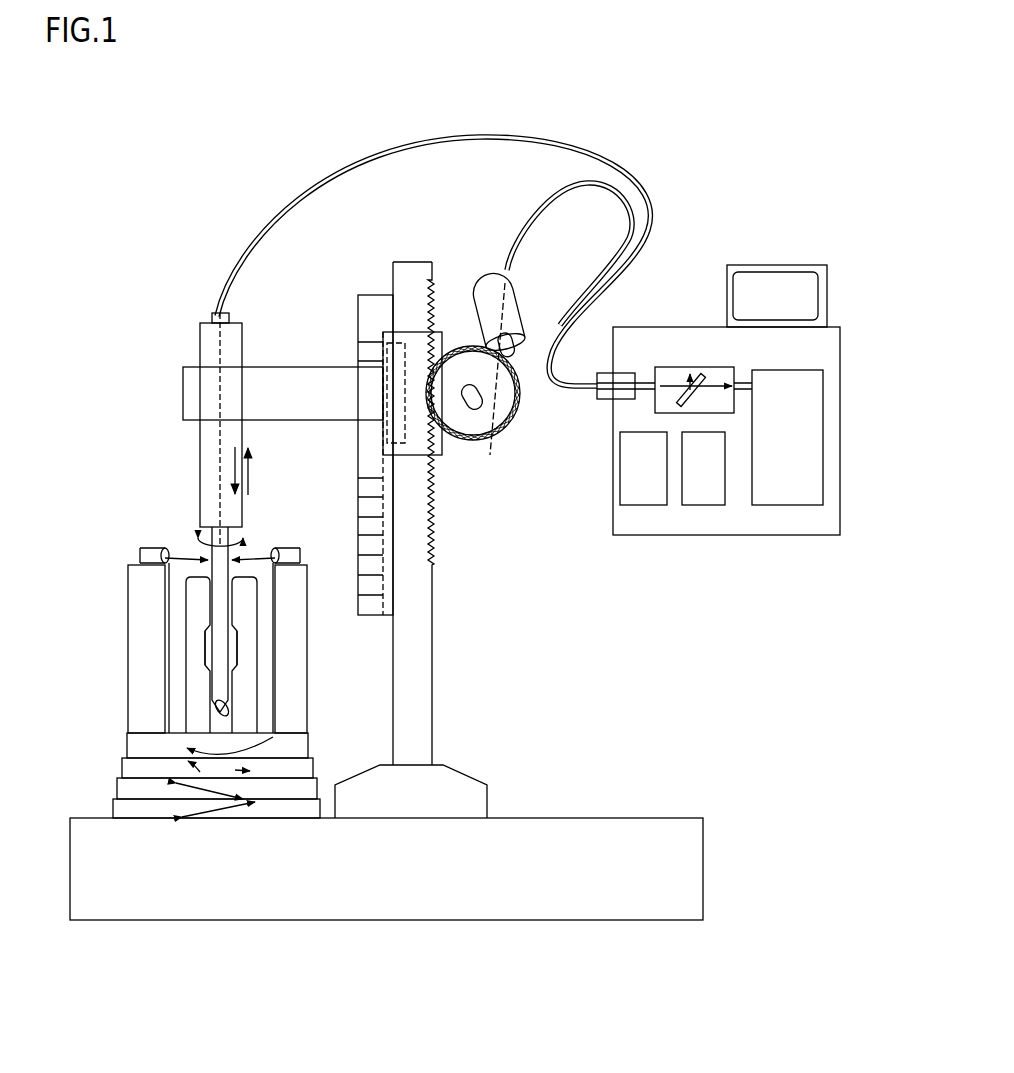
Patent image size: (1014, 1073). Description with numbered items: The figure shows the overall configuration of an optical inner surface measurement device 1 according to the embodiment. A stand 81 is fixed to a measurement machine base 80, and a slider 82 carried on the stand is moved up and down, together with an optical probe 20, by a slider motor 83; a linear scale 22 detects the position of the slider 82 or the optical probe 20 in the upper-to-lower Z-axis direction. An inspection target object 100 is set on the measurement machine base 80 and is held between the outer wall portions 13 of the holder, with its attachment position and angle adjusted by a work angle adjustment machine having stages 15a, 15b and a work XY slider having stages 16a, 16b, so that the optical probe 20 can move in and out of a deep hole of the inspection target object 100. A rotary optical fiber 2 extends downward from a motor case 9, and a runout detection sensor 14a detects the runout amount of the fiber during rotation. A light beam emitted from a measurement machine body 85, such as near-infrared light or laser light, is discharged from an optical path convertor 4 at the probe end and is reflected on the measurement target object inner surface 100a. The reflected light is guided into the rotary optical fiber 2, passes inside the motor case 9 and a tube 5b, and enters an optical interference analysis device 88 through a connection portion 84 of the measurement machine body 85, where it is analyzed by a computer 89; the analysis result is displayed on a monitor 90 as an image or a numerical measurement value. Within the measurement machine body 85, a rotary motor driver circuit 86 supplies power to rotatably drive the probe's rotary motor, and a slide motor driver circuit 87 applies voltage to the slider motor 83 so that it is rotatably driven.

The shape measuring device 1 is at (298, 208).
The rotary optical fiber 2 is at (212, 543).
The optical path convertor 4 is at (224, 709).
The tube 5b is at (308, 198).
The motor case 9 is at (201, 458).
The holder outer wall 13 is at (144, 600).
The runout detection sensor 14a is at (147, 548).
The theta-x rotation stage 15a is at (154, 745).
The theta-y rotation stage 15b is at (145, 770).
The Y stage 16a is at (139, 790).
The X stage 16b is at (128, 808).
The optical probe 20 is at (160, 523).
The linear scale 22 is at (385, 313).
The measurement machine base 80 is at (605, 850).
The stand 81 is at (413, 730).
The slider 82 is at (198, 398).
The slider motor 83 is at (473, 398).
The connection portion 84 is at (633, 375).
The measurement machine body 85 is at (728, 343).
The rotary motor driver circuit 86 is at (640, 490).
The slide motor driver circuit 87 is at (694, 482).
The optical interference analysis device 88 is at (673, 386).
The computer 89 is at (771, 465).
The monitor 90 is at (771, 296).
The inspection target object 100 is at (193, 635).
The measurement target object inner surface 100a is at (208, 675).